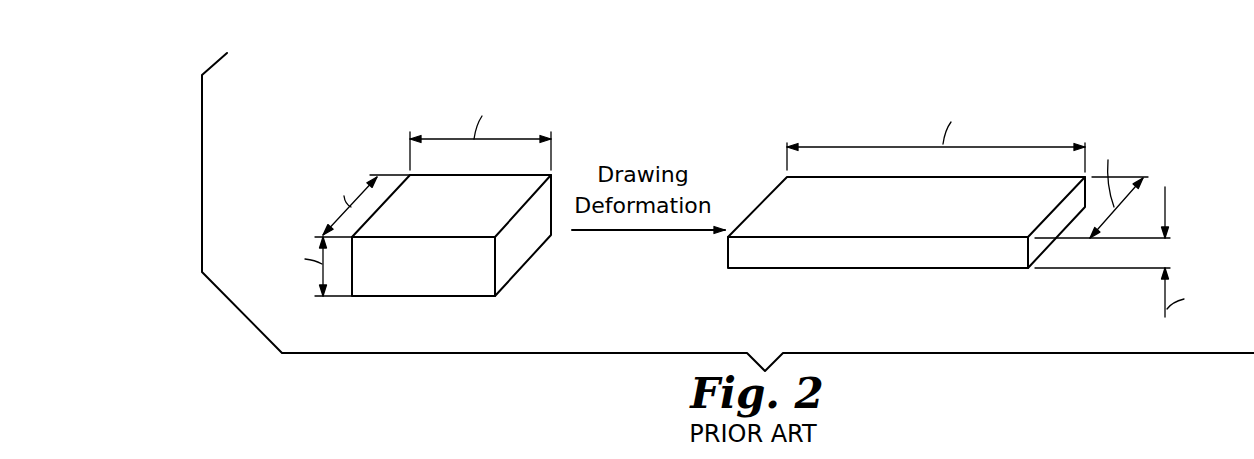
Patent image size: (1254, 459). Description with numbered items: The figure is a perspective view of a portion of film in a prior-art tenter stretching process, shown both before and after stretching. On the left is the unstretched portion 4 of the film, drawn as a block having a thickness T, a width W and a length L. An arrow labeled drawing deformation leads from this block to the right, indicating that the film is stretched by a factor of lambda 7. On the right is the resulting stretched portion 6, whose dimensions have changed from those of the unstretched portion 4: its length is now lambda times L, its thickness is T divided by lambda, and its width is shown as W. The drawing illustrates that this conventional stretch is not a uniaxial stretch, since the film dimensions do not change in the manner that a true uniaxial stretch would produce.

The unstretched portion 4 is at (368, 132).
The stretched portion 6 is at (862, 118).
The lambda 7 is at (648, 258).